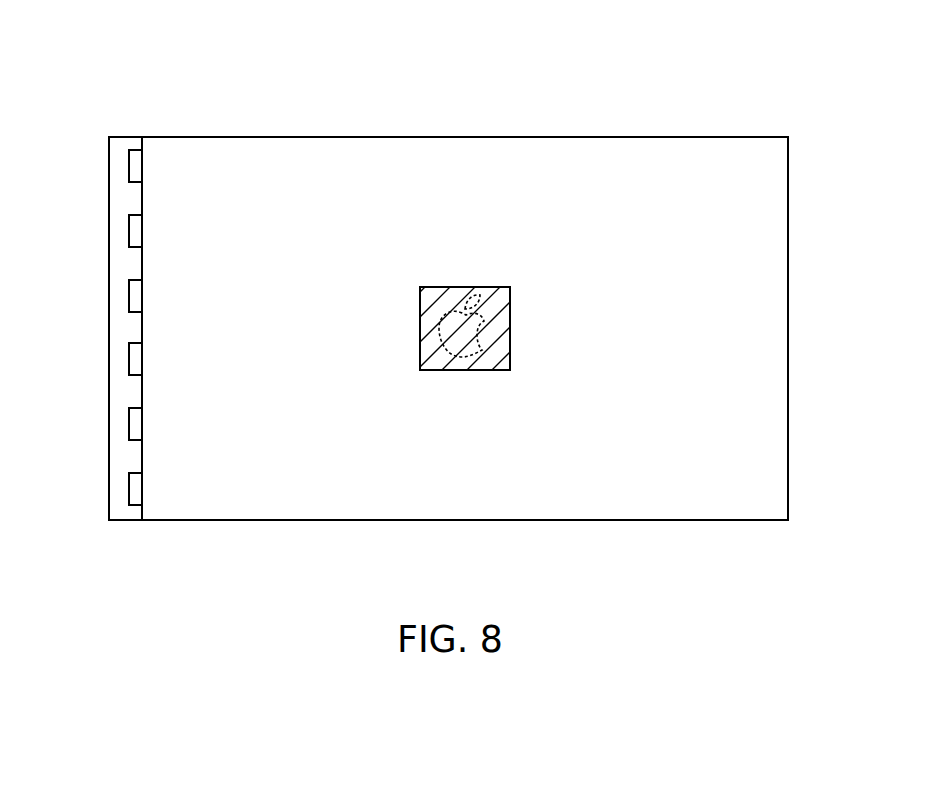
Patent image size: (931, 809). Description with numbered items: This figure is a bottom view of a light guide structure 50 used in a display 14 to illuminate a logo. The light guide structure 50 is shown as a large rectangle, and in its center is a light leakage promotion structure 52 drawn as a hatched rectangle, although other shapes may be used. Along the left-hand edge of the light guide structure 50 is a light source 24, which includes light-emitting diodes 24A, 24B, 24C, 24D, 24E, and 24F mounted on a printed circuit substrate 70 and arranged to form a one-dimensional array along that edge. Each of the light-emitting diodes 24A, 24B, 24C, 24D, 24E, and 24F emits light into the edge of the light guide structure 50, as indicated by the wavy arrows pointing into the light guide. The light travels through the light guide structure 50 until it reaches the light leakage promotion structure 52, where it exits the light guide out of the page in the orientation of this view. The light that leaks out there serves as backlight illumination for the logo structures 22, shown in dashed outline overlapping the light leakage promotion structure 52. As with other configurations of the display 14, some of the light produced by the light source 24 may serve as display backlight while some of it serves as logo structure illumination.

The display 14 is at (753, 75).
The light guide structure 50 is at (603, 137).
The printed circuit substrate 70 is at (130, 510).
The light source 24 is at (128, 117).
The light-emitting diode 24A is at (180, 173).
The light-emitting diode 24B is at (180, 238).
The light-emitting diode 24C is at (180, 303).
The light-emitting diode 24D is at (180, 366).
The light-emitting diode 24E is at (180, 431).
The light-emitting diode 24F is at (180, 496).
The light leakage promotion structures 52 is at (462, 370).
The logo structures 22 is at (483, 330).